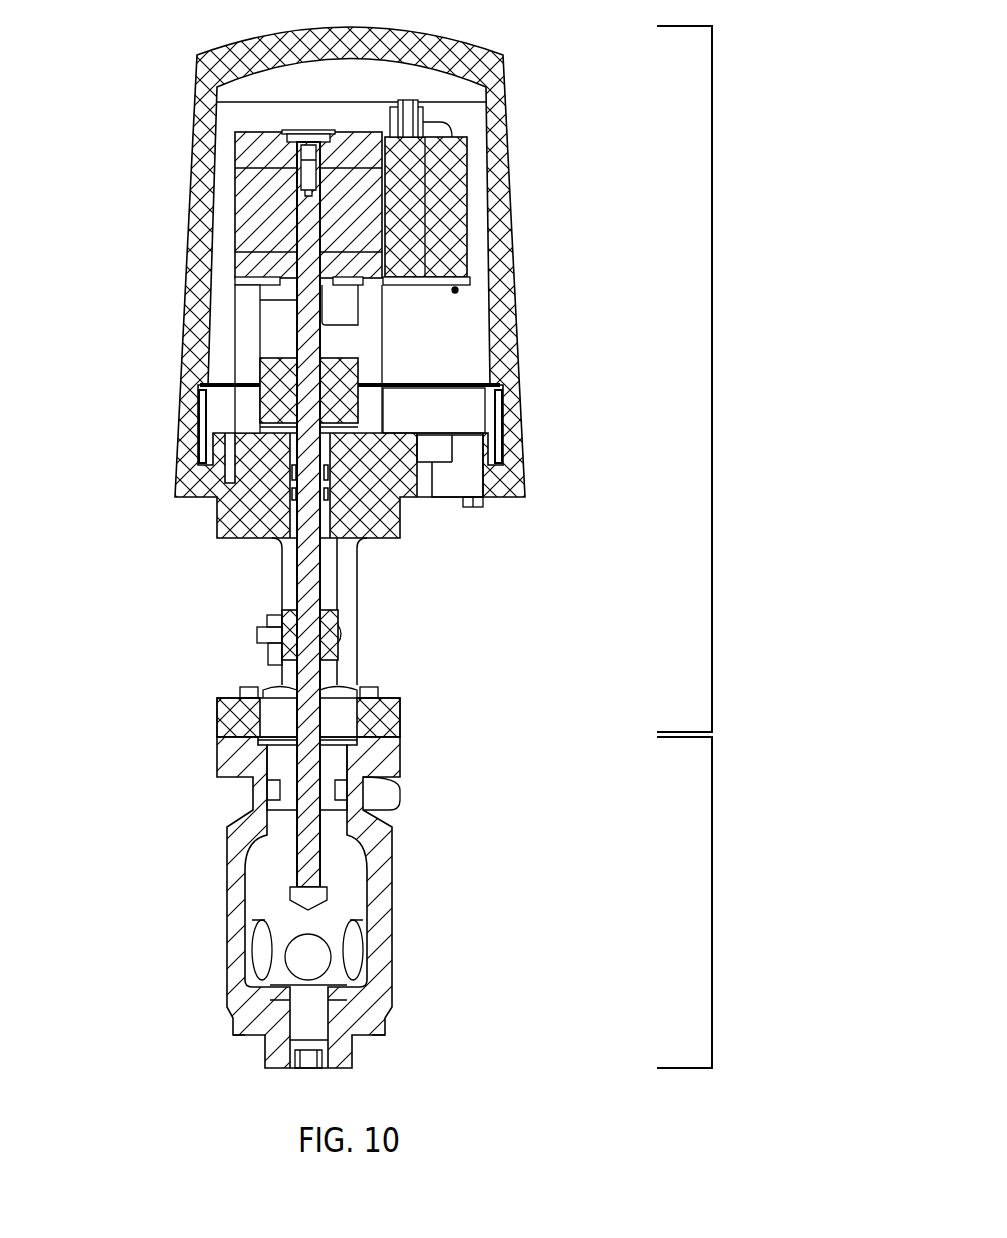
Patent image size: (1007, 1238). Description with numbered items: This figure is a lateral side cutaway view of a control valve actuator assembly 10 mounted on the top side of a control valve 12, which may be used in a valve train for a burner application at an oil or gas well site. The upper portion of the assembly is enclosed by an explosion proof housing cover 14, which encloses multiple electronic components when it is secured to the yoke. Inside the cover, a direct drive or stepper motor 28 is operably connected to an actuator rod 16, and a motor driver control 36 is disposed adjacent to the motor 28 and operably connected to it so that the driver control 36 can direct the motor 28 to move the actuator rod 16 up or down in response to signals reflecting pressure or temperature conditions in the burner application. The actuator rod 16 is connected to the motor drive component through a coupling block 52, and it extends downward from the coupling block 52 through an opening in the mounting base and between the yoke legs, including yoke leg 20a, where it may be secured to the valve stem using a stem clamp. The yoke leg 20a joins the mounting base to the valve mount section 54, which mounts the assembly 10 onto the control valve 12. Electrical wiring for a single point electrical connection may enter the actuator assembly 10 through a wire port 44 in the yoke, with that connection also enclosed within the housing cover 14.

The control valve actuator assembly 10 is at (712, 358).
The control valve 12 is at (712, 890).
The explosion proof housing cover 14 is at (512, 170).
The actuator rod 16 is at (310, 562).
The yoke leg 20a is at (358, 602).
The direct drive or stepper motor 28 is at (258, 222).
The motor driver control 36 is at (443, 173).
The wire port 44 is at (458, 482).
The coupling block 52 is at (280, 380).
The valve mount section 54 is at (227, 722).